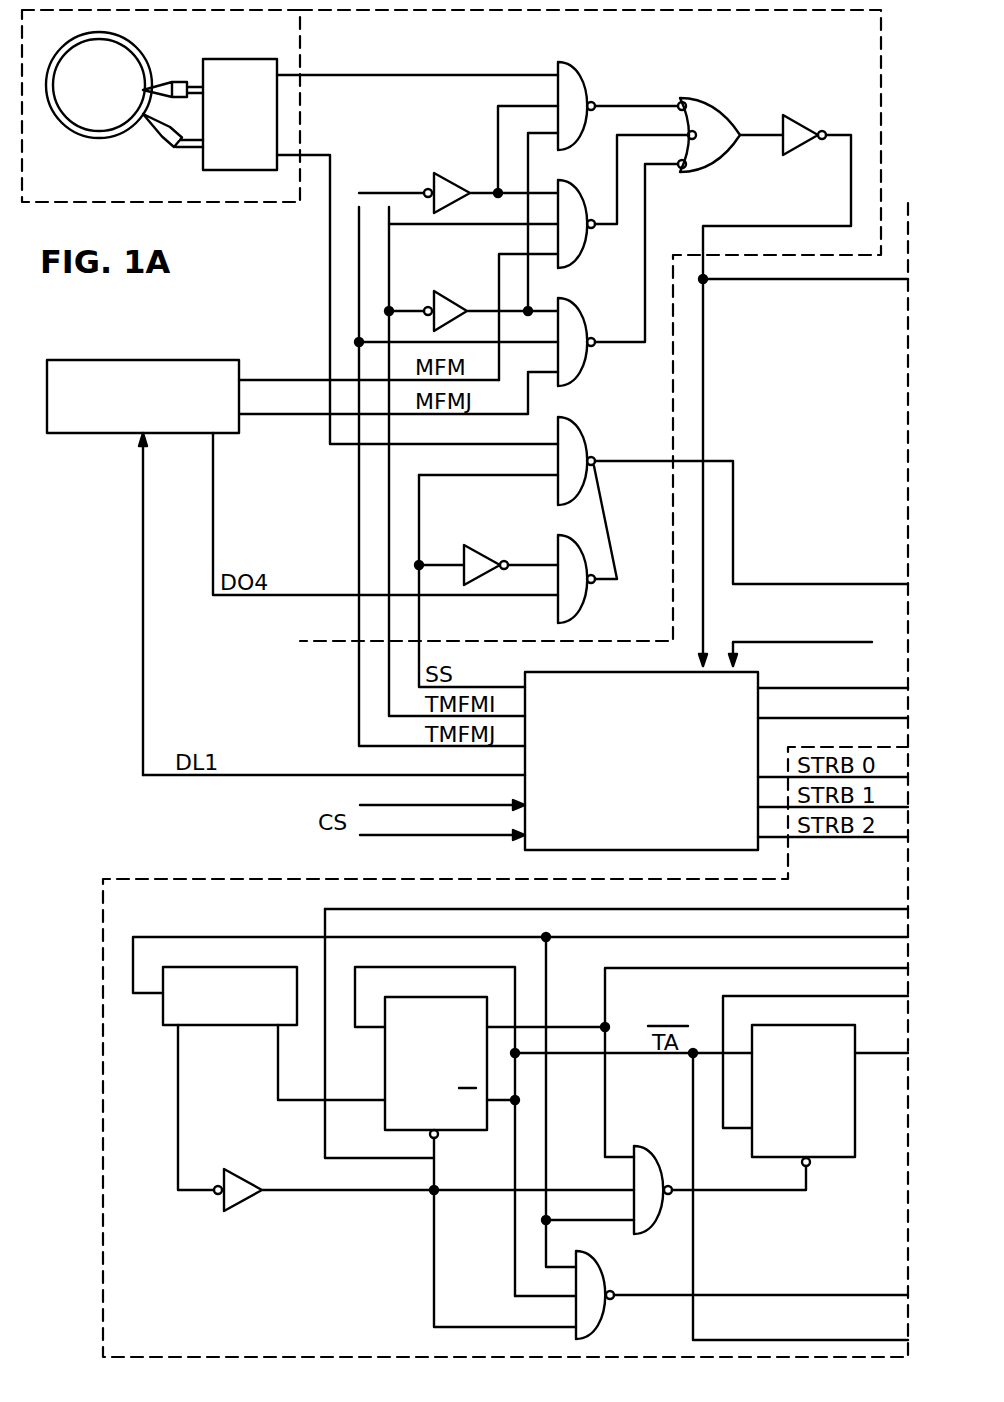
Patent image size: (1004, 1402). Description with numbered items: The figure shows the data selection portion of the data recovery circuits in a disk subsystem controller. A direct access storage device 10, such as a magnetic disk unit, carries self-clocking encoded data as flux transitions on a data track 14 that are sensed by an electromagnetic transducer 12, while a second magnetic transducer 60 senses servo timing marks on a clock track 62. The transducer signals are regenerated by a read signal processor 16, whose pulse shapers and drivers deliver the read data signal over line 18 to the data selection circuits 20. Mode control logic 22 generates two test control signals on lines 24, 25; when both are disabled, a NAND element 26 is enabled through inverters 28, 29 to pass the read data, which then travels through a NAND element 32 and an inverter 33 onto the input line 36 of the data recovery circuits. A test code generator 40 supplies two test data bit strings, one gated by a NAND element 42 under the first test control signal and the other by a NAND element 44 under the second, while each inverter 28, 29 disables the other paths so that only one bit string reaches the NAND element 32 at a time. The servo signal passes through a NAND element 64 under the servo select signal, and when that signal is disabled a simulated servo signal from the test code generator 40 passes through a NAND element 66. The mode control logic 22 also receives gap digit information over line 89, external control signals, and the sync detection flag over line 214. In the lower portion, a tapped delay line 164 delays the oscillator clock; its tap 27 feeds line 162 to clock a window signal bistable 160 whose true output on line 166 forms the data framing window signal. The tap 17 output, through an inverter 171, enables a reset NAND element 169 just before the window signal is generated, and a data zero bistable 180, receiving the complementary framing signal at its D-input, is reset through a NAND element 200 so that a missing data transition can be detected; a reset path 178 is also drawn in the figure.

The direct access storage device 10 is at (195, 193).
The electromagnetic transducer 12 is at (178, 82).
The data track 14 is at (98, 34).
The read signal processor 16 is at (267, 63).
The tap of the delay line 17 is at (196, 1107).
The line 18 is at (367, 72).
The data selection circuits 20 is at (356, 63).
The mode control logic 22 is at (532, 838).
The line 24 is at (389, 365).
The line 25 is at (359, 207).
The NAND element 26 is at (567, 70).
The tap of the delay line 27 is at (313, 1062).
The inverter 28 is at (445, 296).
The inverter 29 is at (440, 171).
The NAND element 32 is at (697, 92).
The inverter 33 is at (794, 118).
The input line 36 is at (851, 184).
The test code generator 40 is at (200, 360).
The NAND element 42 is at (567, 188).
The NAND element 44 is at (578, 310).
The magnetic transducer 60 is at (173, 135).
The clock track 62 is at (100, 139).
The NAND element 64 is at (592, 430).
The NAND element 66 is at (578, 588).
The line 89 is at (705, 611).
The window signal bistable 160 is at (465, 1130).
The line 162 is at (278, 1088).
The tapped delay line 164 is at (180, 1013).
The line 166 is at (618, 968).
The NAND element 169 is at (590, 1280).
The inverter 171 is at (235, 1198).
The reset line 178 is at (325, 1139).
The DATA0 bistable 180 is at (824, 1158).
The NAND element 200 is at (655, 1178).
The line 214 is at (872, 642).